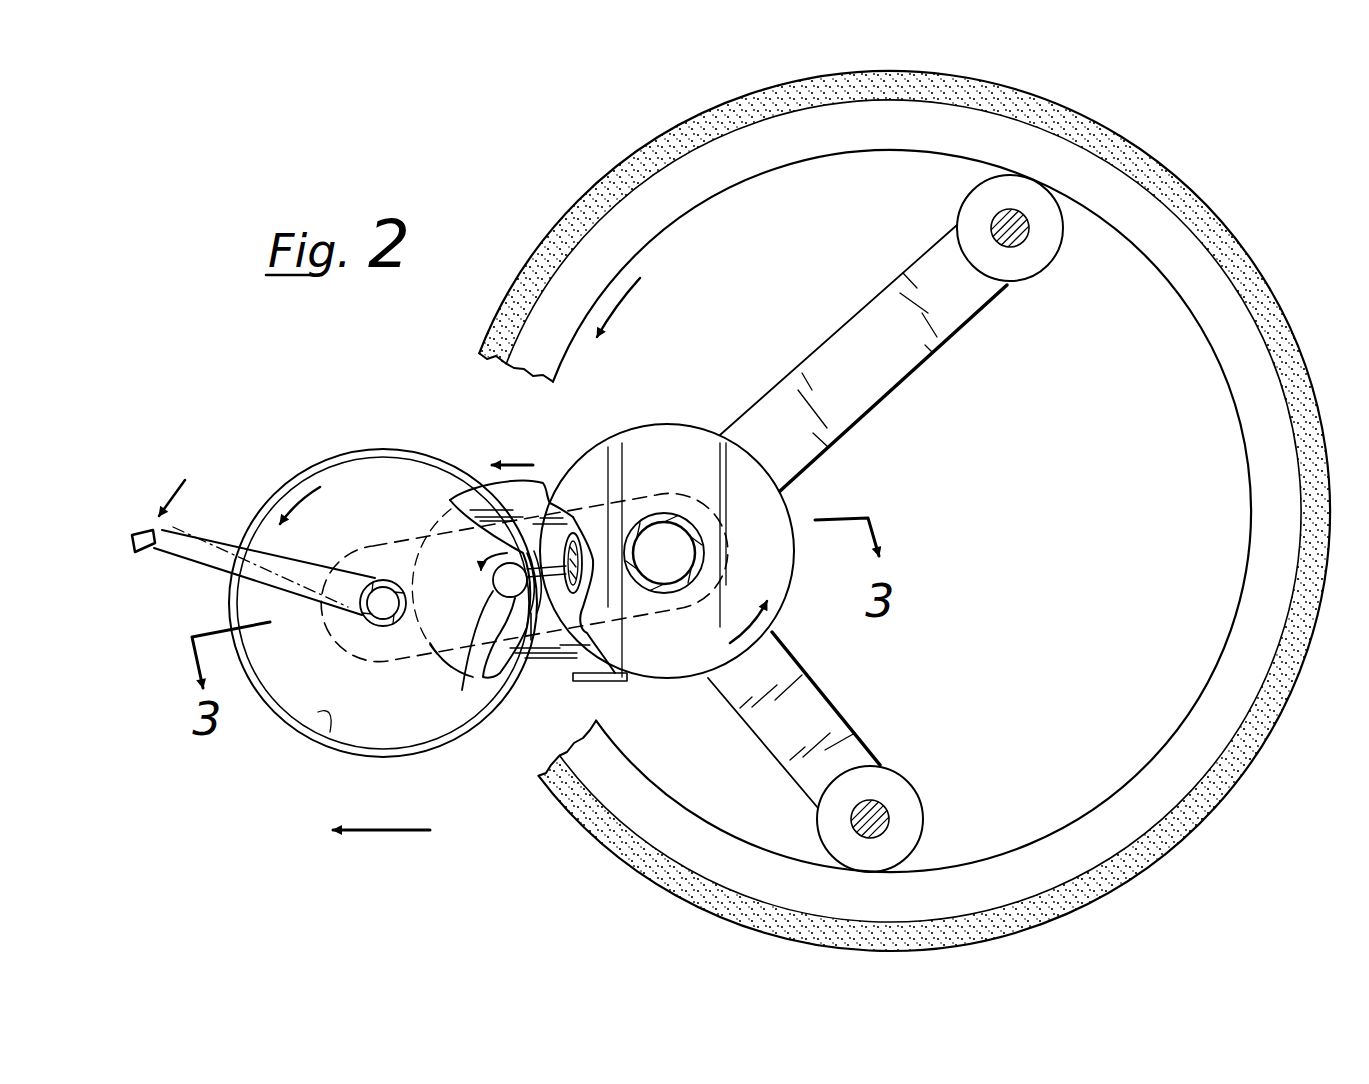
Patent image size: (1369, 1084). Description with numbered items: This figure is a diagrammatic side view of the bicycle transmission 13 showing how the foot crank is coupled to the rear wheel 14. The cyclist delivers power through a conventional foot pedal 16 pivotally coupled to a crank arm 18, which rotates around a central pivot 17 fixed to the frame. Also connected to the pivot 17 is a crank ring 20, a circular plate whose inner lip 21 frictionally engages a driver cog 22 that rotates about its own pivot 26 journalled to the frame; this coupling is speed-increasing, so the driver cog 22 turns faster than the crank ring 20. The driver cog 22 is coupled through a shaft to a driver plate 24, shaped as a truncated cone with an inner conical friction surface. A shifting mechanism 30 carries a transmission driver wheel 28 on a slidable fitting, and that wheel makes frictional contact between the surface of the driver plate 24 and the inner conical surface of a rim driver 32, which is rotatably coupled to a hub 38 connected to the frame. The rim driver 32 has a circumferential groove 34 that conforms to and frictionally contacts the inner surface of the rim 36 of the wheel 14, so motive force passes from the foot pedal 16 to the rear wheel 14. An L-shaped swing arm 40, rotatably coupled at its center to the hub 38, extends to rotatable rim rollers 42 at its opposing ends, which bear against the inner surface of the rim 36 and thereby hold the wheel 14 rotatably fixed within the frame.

The transmission 13 is at (418, 682).
The rear wheel 14 is at (615, 145).
The foot pedal 16 is at (193, 522).
The central pivot 17 is at (383, 580).
The crank arm 18 is at (232, 530).
The crank ring 20 is at (335, 455).
The inner lip 21 is at (325, 715).
The driver cog 22 is at (517, 617).
The driver plate 24 is at (477, 482).
The pivot 26 is at (513, 590).
The transmission driver wheel 28 is at (577, 512).
The shifting mechanism 30 is at (552, 618).
The rim driver 32 is at (680, 455).
The circumferential groove 34 is at (666, 424).
The rim 36 is at (663, 790).
The hub 38 is at (682, 553).
The swing arm 40 is at (967, 322).
The rim rollers 42 is at (1062, 247).